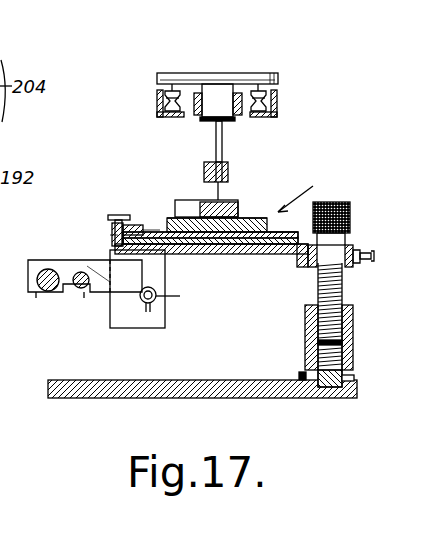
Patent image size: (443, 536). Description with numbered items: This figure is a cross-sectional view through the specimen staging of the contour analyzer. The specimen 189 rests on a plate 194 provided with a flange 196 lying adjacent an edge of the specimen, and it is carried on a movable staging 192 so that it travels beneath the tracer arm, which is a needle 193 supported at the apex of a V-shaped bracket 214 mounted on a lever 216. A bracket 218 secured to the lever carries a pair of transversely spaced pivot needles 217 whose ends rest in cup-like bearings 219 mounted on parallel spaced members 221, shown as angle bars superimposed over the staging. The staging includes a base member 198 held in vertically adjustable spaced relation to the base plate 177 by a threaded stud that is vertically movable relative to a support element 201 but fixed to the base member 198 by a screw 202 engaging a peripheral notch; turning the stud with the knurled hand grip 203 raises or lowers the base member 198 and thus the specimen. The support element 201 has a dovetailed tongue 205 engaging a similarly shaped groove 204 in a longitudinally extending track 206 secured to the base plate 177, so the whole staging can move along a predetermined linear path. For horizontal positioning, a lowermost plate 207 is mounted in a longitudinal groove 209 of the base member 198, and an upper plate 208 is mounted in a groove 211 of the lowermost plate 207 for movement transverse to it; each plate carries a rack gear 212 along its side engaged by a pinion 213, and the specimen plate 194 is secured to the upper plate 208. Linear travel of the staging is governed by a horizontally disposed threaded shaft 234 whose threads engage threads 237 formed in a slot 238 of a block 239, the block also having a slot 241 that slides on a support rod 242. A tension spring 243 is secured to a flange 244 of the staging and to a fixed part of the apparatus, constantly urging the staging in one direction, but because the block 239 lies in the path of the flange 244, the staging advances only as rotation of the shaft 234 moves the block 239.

The base plate 177 is at (268, 389).
The specimen 189 is at (235, 201).
The movable staging 192 is at (307, 190).
The needle 193 is at (206, 181).
The plate 194 is at (192, 224).
The flange 196 is at (180, 204).
The base member 198 is at (237, 248).
The support element 201 is at (353, 327).
The screw 202 is at (372, 255).
The knurled hand grip 203 is at (351, 210).
The groove 204 is at (354, 378).
The dovetailed tongue 205 is at (330, 393).
The track 206 is at (300, 374).
The lowermost plate 207 is at (286, 250).
The upper plate 208 is at (250, 217).
The longitudinal groove 209 is at (198, 247).
The groove 211 is at (297, 237).
The rack gear 212 is at (138, 229).
The pinion 213 is at (110, 217).
The V-shaped bracket 214 is at (223, 139).
The lever 216 is at (215, 137).
The needles 217 is at (273, 76).
The bracket 218 is at (214, 70).
The cup-like bearings 219 is at (278, 98).
The parallel spaced members 221 is at (158, 99).
The shaft 234 is at (66, 288).
The threads 237 is at (48, 268).
The slot 238 is at (40, 293).
The block 239 is at (135, 303).
The slot 241 is at (88, 292).
The support rod 242 is at (92, 262).
The tension spring 243 is at (185, 300).
The flange 244 is at (150, 328).